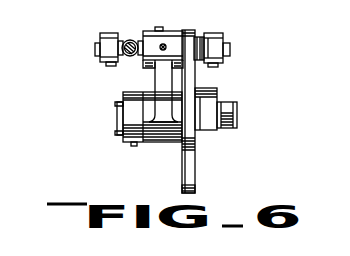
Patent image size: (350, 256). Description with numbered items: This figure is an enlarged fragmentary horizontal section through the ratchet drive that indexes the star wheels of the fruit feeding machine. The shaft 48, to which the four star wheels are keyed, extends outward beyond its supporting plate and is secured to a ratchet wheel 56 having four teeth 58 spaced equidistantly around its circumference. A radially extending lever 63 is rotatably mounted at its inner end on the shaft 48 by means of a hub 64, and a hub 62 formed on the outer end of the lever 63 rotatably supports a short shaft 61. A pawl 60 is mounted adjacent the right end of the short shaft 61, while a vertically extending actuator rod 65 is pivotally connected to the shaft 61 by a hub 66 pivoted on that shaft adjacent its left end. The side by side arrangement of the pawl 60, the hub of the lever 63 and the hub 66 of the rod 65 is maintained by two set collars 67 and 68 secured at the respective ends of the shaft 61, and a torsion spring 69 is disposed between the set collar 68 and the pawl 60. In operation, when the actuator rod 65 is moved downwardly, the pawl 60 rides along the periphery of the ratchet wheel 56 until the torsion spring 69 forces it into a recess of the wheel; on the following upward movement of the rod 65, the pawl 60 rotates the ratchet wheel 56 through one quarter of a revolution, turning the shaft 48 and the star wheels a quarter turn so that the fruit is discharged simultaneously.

The shaft 48 is at (117, 112).
The ratchet wheel 56 is at (190, 160).
The teeth 58 is at (197, 183).
The pawl 60 is at (185, 73).
The short shaft 61 is at (230, 55).
The hub 62 is at (172, 35).
The lever 63 is at (157, 75).
The hub 64 is at (163, 133).
The actuator rod 65 is at (124, 61).
The hub 66 is at (131, 36).
The set collar 67 is at (100, 47).
The set collar 68 is at (222, 36).
The torsion spring 69 is at (198, 40).